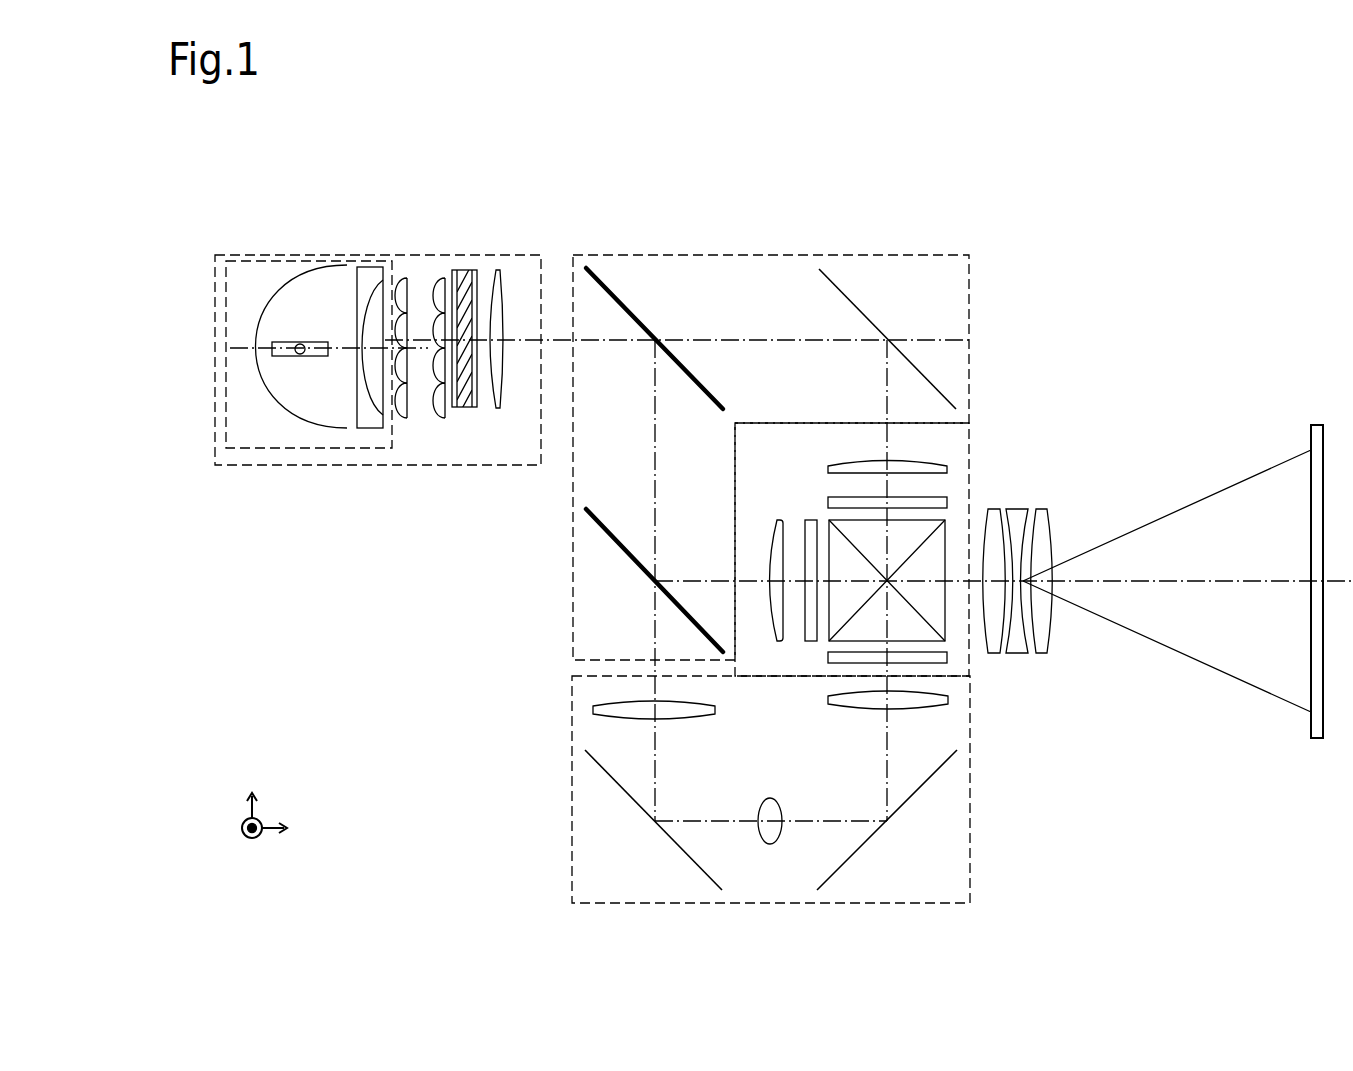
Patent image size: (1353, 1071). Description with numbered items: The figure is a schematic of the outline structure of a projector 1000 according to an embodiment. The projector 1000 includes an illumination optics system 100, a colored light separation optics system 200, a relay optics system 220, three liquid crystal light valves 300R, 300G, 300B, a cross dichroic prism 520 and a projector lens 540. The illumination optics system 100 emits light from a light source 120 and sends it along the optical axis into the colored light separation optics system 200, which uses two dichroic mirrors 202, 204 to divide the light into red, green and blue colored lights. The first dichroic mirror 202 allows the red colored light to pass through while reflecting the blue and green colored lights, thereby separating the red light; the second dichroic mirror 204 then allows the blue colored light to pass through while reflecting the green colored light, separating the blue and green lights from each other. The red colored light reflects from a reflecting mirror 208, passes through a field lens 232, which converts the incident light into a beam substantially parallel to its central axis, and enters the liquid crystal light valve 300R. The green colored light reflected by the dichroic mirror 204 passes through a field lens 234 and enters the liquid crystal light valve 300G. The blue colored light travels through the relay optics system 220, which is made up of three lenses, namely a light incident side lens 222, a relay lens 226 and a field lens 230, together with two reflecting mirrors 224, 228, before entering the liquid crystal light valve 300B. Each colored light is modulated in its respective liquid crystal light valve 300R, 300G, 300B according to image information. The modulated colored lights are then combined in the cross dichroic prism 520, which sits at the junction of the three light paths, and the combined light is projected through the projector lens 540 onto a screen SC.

The projector 1000 is at (784, 506).
The illumination optics system 100 is at (313, 253).
The light source 120 is at (302, 452).
The colored light separation optics system 200 is at (645, 253).
The dichroic mirror 202 is at (621, 302).
The dichroic mirror 204 is at (614, 538).
The reflecting mirror 208 is at (856, 304).
The relay optics system 220 is at (572, 705).
The light incident side lens 222 is at (716, 712).
The reflecting mirror 224 is at (630, 796).
The relay lens 226 is at (768, 800).
The reflecting mirror 228 is at (917, 790).
The field lens 230 is at (829, 702).
The field lens 232 is at (898, 461).
The field lens 234 is at (777, 519).
The liquid crystal light valve 300R is at (826, 503).
The liquid crystal light valve 300G is at (812, 519).
The liquid crystal light valve 300B is at (827, 658).
The cross dichroic prism 520 is at (947, 521).
The projector lens 540 is at (1022, 508).
The screen SC is at (1316, 424).